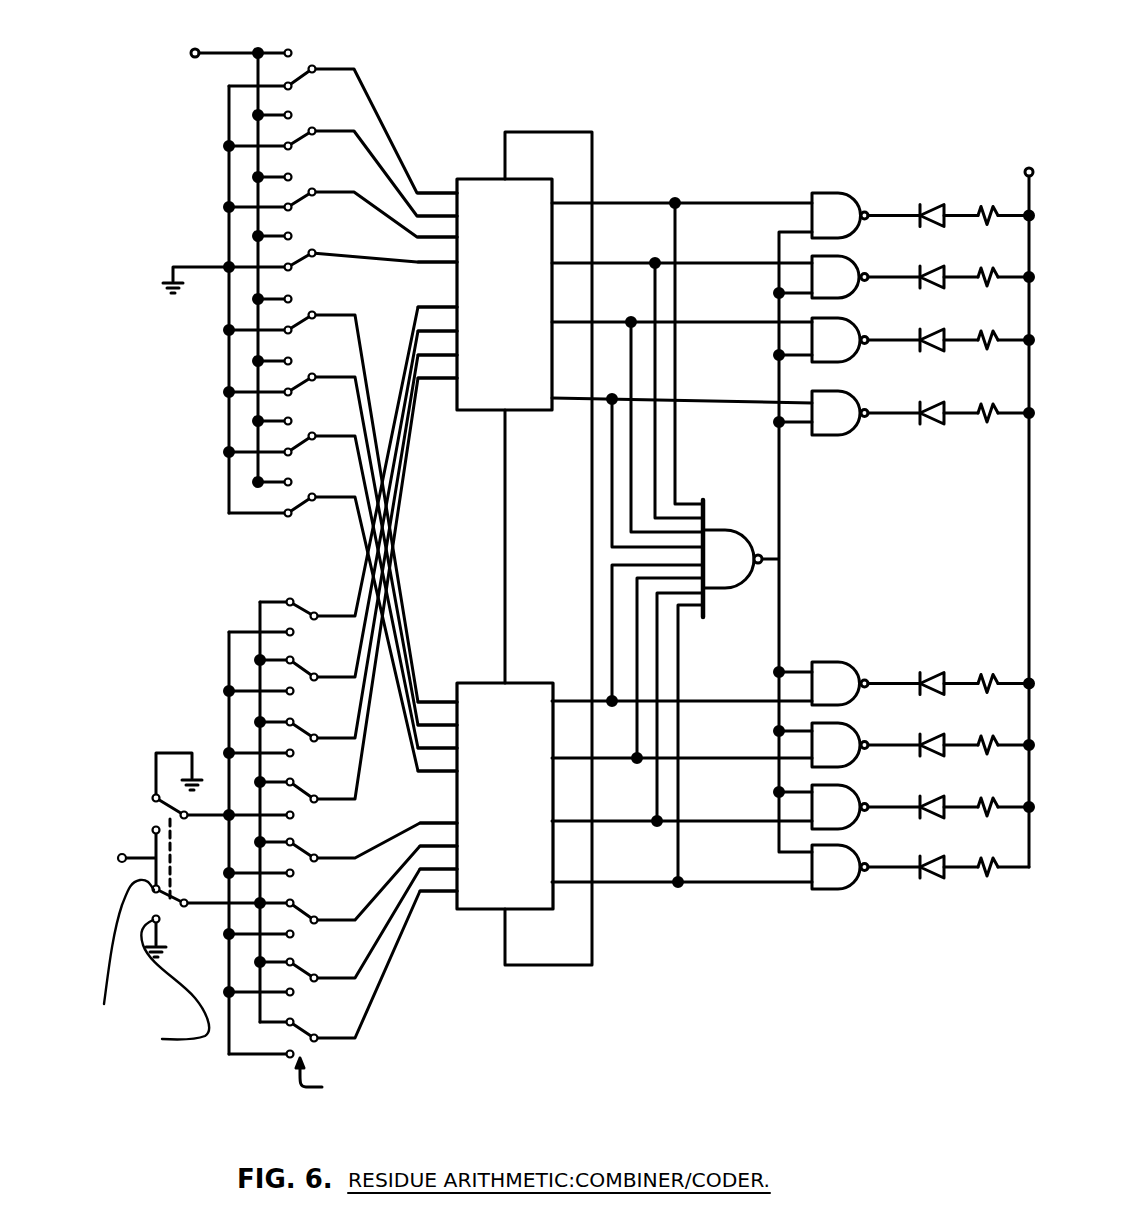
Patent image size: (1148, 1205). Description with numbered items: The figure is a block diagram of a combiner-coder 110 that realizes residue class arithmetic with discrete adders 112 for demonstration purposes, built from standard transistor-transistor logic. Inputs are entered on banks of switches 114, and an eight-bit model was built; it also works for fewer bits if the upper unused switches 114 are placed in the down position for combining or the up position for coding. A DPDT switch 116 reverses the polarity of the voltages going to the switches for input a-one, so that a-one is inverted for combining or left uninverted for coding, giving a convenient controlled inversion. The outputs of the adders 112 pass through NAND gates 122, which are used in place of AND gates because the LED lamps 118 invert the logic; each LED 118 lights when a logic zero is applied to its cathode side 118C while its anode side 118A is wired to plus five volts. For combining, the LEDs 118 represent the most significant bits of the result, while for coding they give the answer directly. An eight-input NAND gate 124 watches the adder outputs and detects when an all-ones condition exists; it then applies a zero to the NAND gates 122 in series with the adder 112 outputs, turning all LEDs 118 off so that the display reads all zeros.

The combiner-coder 110 is at (816, 68).
The discrete adders 112 is at (546, 413).
The input switches 114 is at (229, 161).
The DPDT switch 116 is at (152, 812).
The LED lamps 118 is at (939, 537).
The anode side 118A is at (1006, 683).
The cathode side 118C is at (960, 683).
The NAND gates 122 is at (812, 434).
The eight-input NAND gate 124 is at (757, 566).